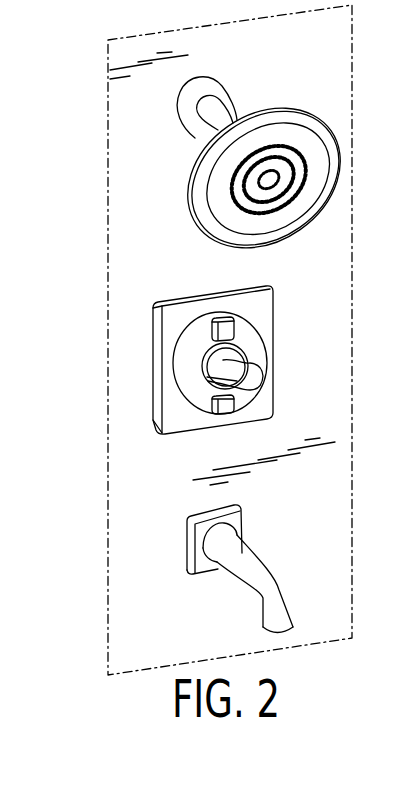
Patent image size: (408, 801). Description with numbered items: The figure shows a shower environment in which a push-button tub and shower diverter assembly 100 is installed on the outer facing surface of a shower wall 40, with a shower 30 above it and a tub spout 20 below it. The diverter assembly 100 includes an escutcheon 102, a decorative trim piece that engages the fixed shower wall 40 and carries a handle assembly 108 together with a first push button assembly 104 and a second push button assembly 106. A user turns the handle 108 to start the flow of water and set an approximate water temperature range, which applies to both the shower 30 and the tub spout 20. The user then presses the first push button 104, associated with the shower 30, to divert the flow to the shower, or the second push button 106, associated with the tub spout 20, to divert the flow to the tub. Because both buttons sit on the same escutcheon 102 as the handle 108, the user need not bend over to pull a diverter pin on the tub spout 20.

The tub spout 20 is at (174, 543).
The shower 30 is at (256, 114).
The shower wall 40 is at (140, 182).
The diverter assembly 100 is at (180, 361).
The escutcheon 102 is at (258, 305).
The first push button assembly 104 is at (228, 318).
The second push button assembly 106 is at (193, 433).
The handle assembly 108 is at (250, 380).